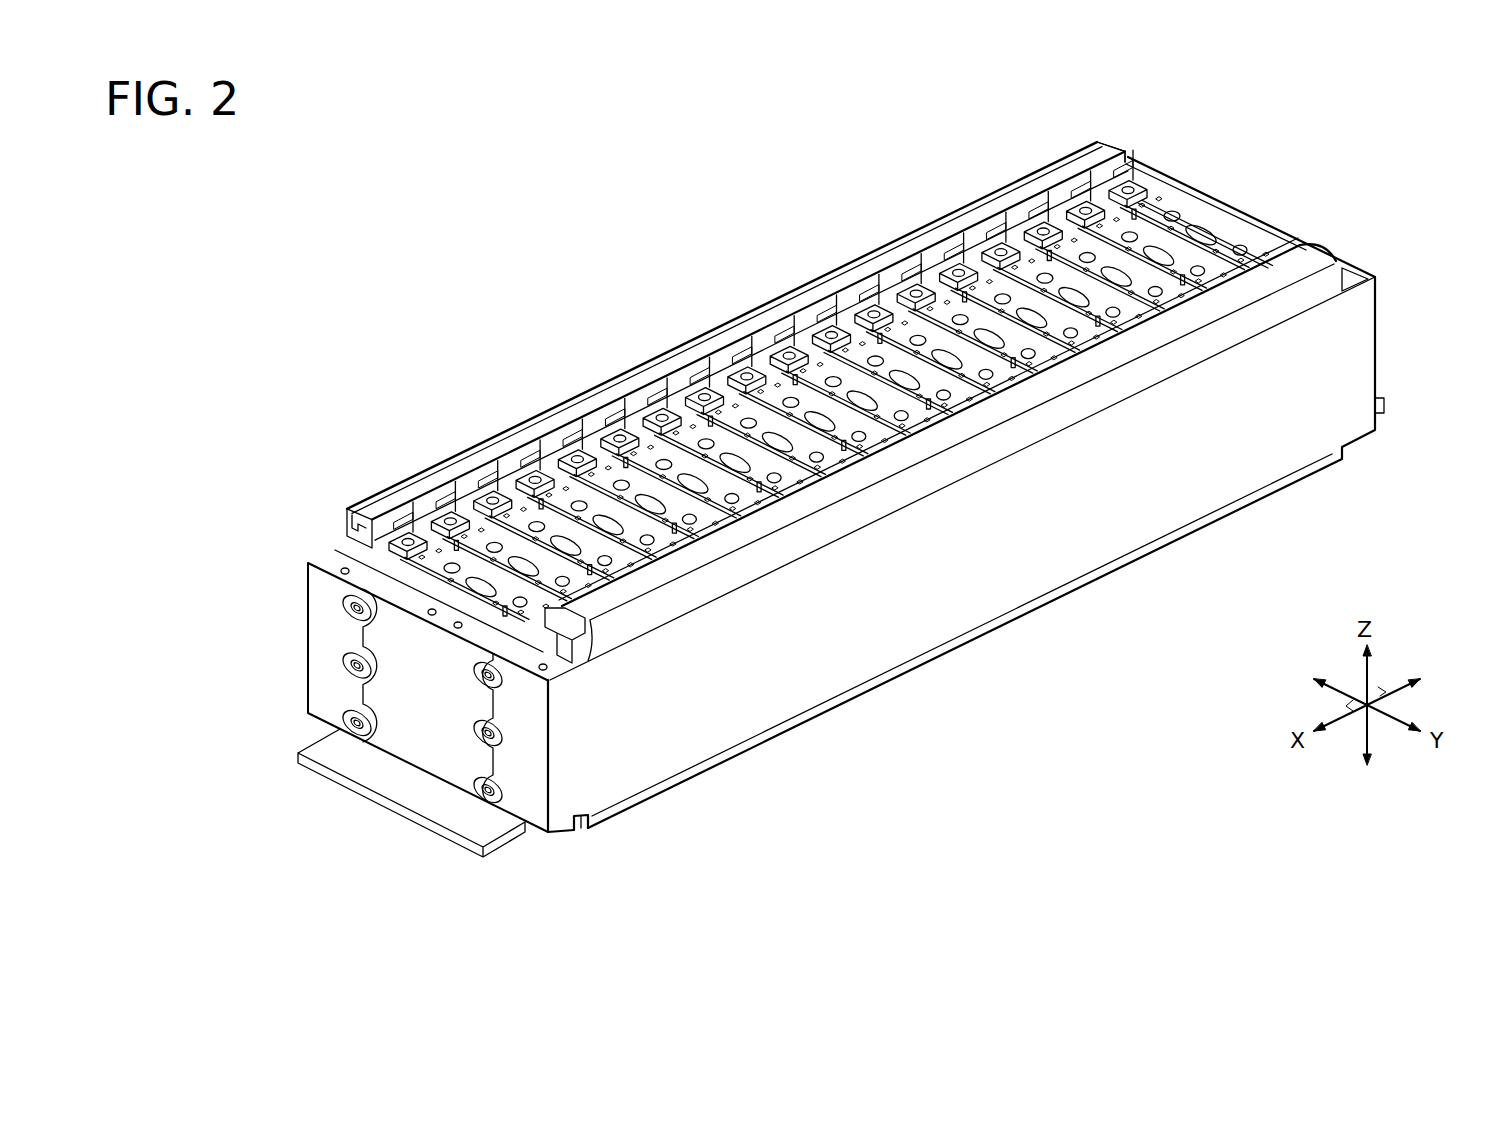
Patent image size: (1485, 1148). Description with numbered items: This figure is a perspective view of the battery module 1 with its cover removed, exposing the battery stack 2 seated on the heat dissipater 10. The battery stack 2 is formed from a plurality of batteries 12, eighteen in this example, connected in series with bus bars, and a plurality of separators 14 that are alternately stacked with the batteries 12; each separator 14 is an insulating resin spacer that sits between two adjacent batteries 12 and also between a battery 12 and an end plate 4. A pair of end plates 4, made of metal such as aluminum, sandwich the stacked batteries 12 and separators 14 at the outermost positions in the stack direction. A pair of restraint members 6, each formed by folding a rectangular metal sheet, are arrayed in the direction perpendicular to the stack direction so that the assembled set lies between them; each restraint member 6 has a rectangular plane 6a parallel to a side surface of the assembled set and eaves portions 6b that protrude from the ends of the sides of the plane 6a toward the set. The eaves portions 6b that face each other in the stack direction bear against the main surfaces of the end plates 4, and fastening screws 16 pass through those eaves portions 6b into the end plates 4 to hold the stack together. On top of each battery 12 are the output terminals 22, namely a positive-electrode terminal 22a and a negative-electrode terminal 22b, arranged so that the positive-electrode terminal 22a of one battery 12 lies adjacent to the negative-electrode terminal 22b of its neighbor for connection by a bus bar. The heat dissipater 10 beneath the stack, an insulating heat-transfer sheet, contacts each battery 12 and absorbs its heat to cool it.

The battery module 1 is at (983, 803).
The battery stack 2 is at (1404, 354).
The end plate 4 is at (427, 750).
The restraint member 6 is at (1307, 440).
The plane 6a is at (702, 742).
The eaves portion 6b is at (547, 836).
The heat dissipater 10 is at (453, 832).
The battery 12 is at (1173, 213).
The separator 14 is at (1128, 158).
The fastening screw 16 is at (495, 798).
The output terminal 22 is at (704, 345).
The positive-electrode terminal 22a is at (400, 527).
The negative-electrode terminal 22b is at (443, 522).